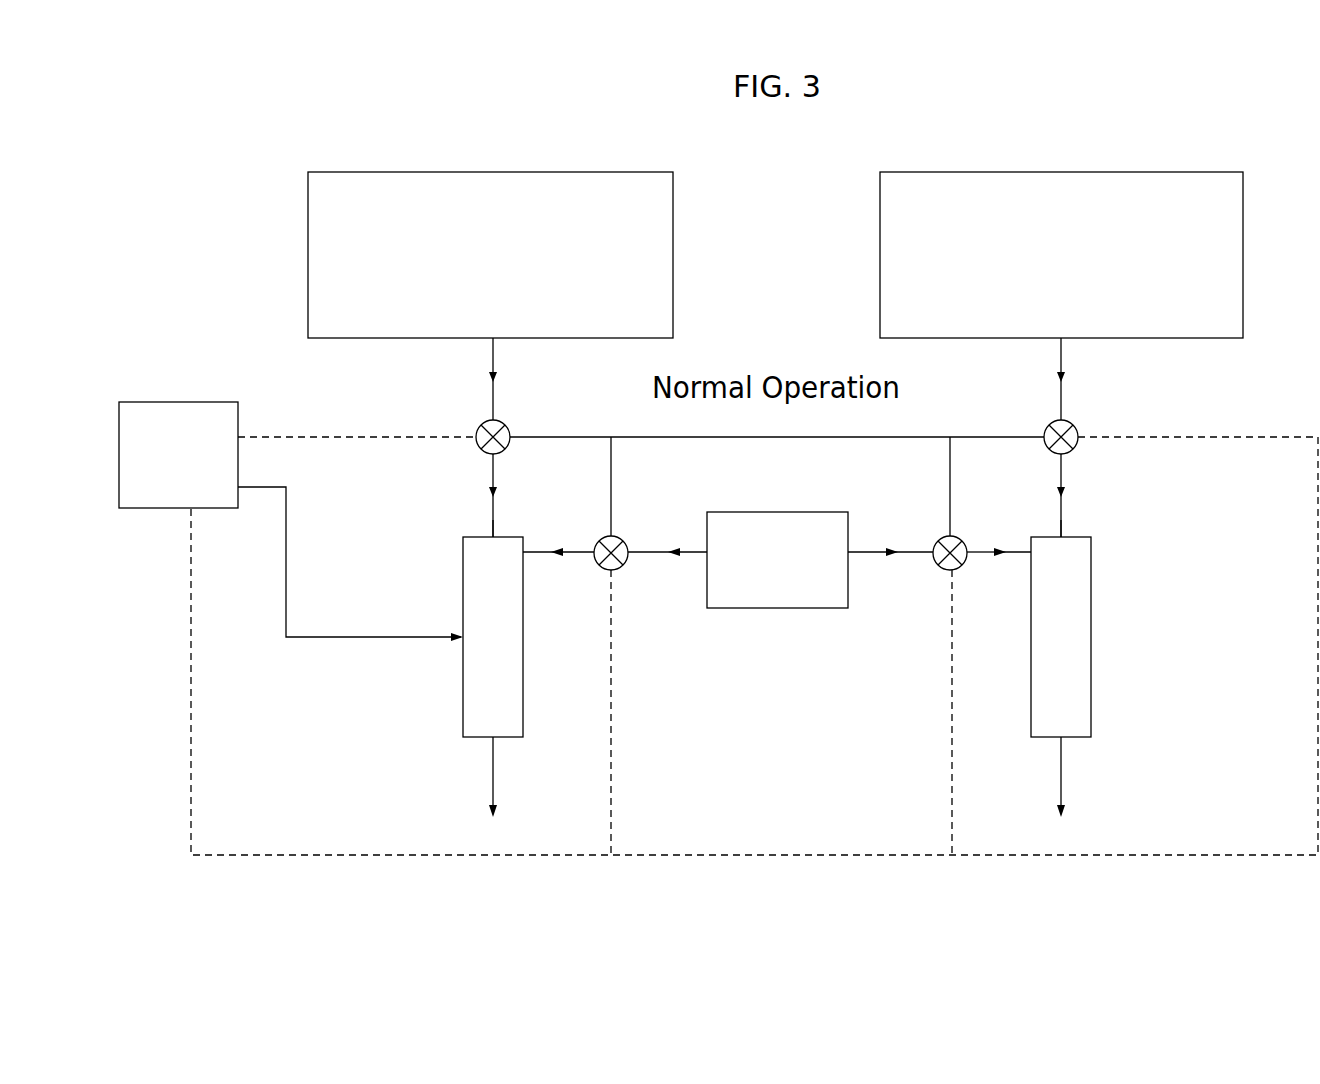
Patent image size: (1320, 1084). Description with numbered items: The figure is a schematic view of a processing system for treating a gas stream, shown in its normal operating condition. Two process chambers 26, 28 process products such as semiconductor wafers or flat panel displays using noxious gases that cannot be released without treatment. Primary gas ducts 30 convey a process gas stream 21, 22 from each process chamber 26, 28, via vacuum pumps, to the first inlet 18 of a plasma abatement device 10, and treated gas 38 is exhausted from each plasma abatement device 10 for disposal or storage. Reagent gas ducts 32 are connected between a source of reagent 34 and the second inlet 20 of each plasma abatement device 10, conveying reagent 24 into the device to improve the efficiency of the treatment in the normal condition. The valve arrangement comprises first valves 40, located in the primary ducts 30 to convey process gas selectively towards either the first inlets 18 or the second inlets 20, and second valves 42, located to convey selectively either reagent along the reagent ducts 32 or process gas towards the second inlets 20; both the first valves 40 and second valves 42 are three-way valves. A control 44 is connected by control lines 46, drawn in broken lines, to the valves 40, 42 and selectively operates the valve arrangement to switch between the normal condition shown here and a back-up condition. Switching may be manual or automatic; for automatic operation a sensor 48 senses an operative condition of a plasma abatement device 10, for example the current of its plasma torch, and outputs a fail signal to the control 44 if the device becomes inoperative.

The plasma abatement device 10 is at (777, 637).
The first inlet 18 is at (493, 537).
The second inlet 20 is at (527, 555).
The process gas stream 21 is at (509, 379).
The process gas stream 22 is at (1044, 379).
The reagent 24 is at (777, 496).
The process chamber 26 is at (490, 255).
The process chamber 28 is at (1061, 255).
The primary gas duct 30 is at (493, 358).
The reagent gas duct 32 is at (575, 555).
The source of reagent 34 is at (777, 560).
The treated gas 38 is at (777, 791).
The first valve 40 is at (513, 432).
The second valve 42 is at (600, 540).
The control 44 is at (178, 455).
The control line 46 is at (288, 437).
The sensor 48 is at (378, 637).